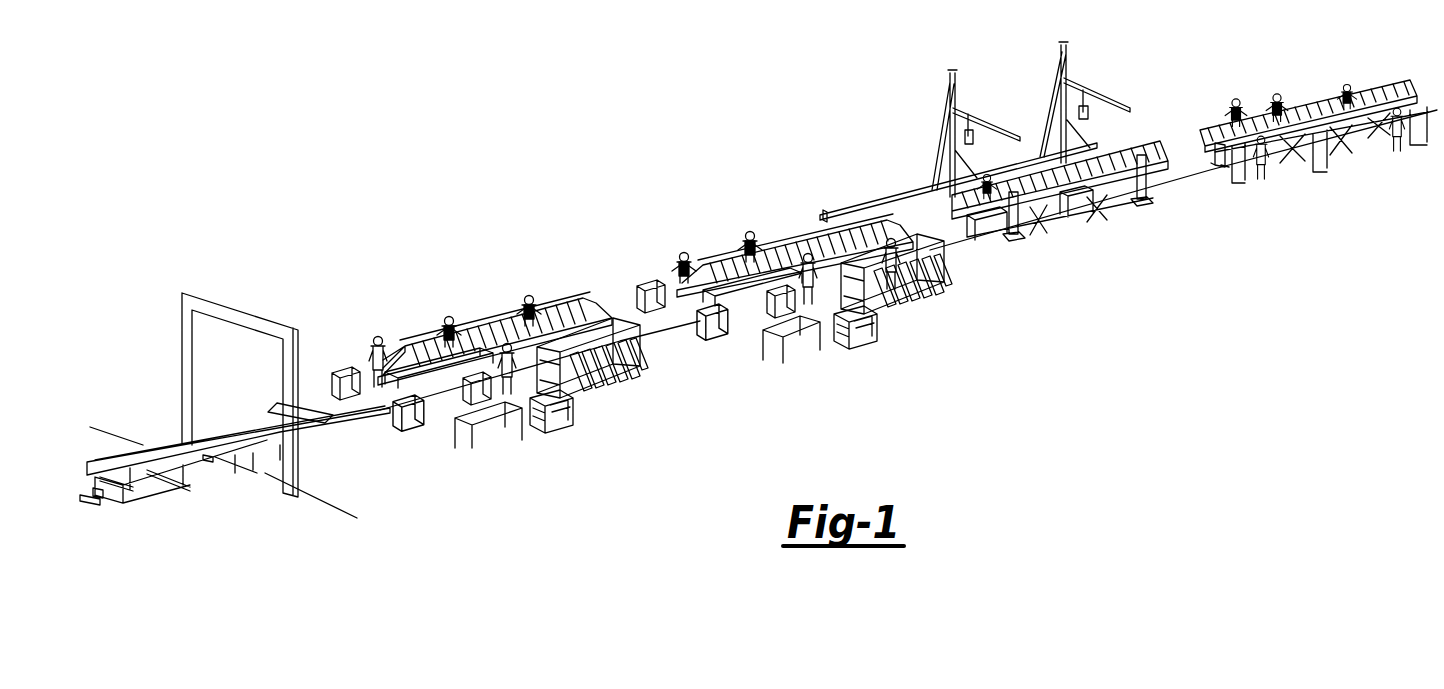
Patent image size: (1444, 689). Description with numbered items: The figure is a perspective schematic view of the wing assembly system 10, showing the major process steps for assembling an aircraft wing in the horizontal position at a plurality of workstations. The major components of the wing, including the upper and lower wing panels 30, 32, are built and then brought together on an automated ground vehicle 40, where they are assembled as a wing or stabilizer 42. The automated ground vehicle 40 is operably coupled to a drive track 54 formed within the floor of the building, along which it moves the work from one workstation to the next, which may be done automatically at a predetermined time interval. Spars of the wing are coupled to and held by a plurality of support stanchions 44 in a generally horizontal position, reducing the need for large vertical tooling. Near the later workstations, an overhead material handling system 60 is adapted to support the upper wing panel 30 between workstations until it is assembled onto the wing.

The wing assembly system 10 is at (626, 236).
The upper wing panel 30 is at (1045, 190).
The lower wing panel 32 is at (170, 446).
The automated ground vehicle 40 is at (163, 483).
The wing or stabilizer 42 is at (1213, 140).
The support stanchions 44 is at (420, 428).
The drive track 54 is at (657, 335).
The overhead material handling system 60 is at (928, 126).